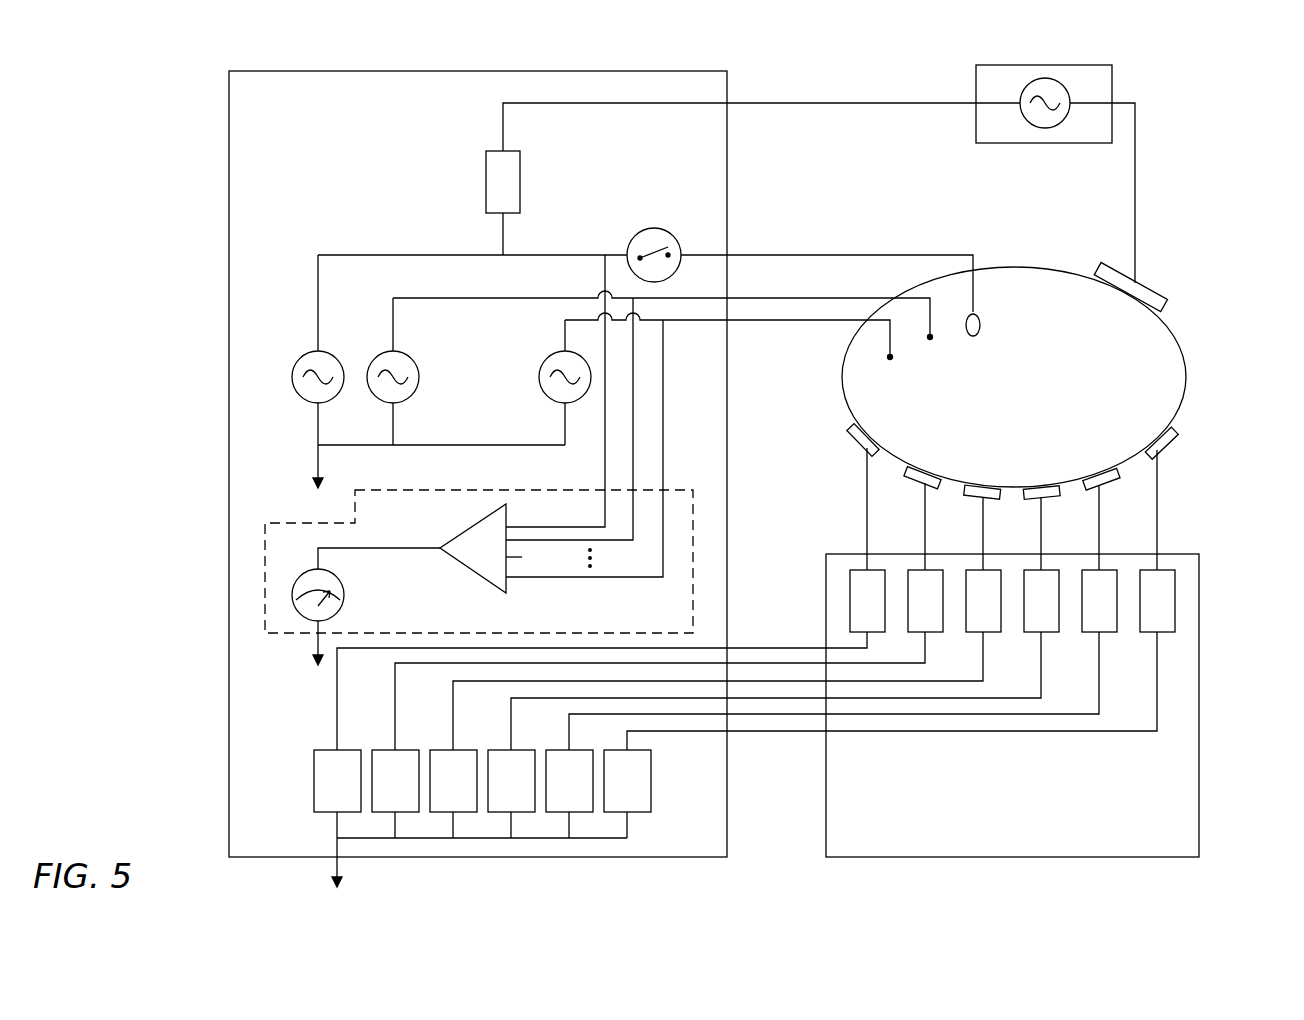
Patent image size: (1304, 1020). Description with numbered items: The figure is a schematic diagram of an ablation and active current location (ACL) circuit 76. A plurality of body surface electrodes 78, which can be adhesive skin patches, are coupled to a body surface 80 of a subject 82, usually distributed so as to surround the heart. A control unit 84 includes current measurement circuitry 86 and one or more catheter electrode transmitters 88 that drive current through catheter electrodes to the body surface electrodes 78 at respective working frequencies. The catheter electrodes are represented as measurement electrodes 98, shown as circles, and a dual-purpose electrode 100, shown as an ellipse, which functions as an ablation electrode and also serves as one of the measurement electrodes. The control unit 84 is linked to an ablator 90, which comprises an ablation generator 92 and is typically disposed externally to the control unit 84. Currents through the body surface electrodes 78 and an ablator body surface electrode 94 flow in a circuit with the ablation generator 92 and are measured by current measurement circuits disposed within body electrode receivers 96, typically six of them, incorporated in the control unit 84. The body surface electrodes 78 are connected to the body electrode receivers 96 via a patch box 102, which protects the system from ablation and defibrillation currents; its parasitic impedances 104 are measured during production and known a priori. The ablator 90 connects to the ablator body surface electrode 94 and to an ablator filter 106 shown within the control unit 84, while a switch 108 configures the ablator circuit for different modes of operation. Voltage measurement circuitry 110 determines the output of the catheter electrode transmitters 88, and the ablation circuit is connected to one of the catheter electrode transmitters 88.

The ablation and active current location (ACL) circuit 76 is at (132, 115).
The body surface electrodes 78 is at (850, 446).
The body surface 80 is at (1186, 384).
The subject 82 is at (1032, 268).
The control unit 84 is at (229, 778).
The current measurement circuitry 86 is at (265, 580).
The catheter electrode transmitters 88 is at (330, 350).
The ablator 90 is at (1112, 68).
The ablation generator 92 is at (1030, 128).
The ablator body surface electrode 94 is at (1160, 305).
The body electrode receivers 96 is at (735, 759).
The measurement electrodes 98 is at (890, 359).
The dual-purpose electrode 100 is at (973, 336).
The patch box 102 is at (1199, 690).
The patch box parasitic impedances 104 is at (850, 600).
The ablator filter 106 is at (486, 180).
The switch 108 is at (656, 228).
The voltage measurement circuitry 110 is at (344, 610).